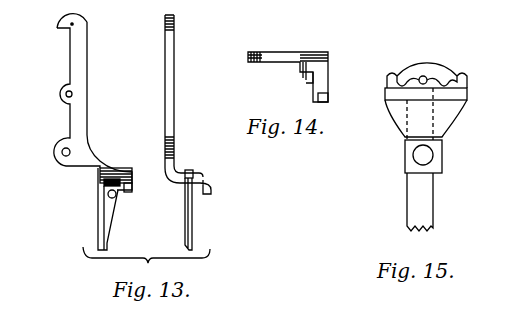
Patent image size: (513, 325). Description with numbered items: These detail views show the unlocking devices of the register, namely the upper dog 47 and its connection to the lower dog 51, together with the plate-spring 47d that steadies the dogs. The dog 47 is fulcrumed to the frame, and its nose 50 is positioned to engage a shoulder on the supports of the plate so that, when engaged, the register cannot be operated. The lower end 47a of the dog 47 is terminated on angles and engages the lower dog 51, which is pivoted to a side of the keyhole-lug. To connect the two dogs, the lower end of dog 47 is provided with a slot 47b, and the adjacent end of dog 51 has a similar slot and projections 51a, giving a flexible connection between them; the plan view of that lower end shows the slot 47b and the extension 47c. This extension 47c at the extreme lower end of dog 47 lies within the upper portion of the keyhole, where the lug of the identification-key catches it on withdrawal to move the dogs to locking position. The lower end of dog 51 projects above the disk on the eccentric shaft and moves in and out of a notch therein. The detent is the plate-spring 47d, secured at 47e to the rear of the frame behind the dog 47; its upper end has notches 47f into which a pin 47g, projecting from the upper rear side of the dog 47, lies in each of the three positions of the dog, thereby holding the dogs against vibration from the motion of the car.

In FIG. 13, the dog 47 is at (82, 77).
In FIG. 15, the dog 47 is at (420, 202).
In FIG. 13, the lower end of dog 47a is at (112, 168).
In FIG. 14, the lower end of dog 47a is at (270, 63).
In FIG. 14, the slot 47b is at (308, 78).
In FIG. 13, the extension 47c is at (132, 188).
In FIG. 14, the extension 47c is at (328, 97).
In FIG. 15, the plate-spring 47d is at (445, 115).
In FIG. 15, the securing point of plate-spring 47e is at (433, 155).
In FIG. 15, the notches 47f is at (402, 84).
In FIG. 13, the pin 47g is at (72, 24).
In FIG. 15, the pin 47g is at (423, 76).
In FIG. 13, the nose 50 is at (64, 29).
In FIG. 15, the nose 50 is at (452, 72).
In FIG. 13, the lower dog 51 is at (98, 213).
In FIG. 13, the slot and projections 51a is at (104, 184).